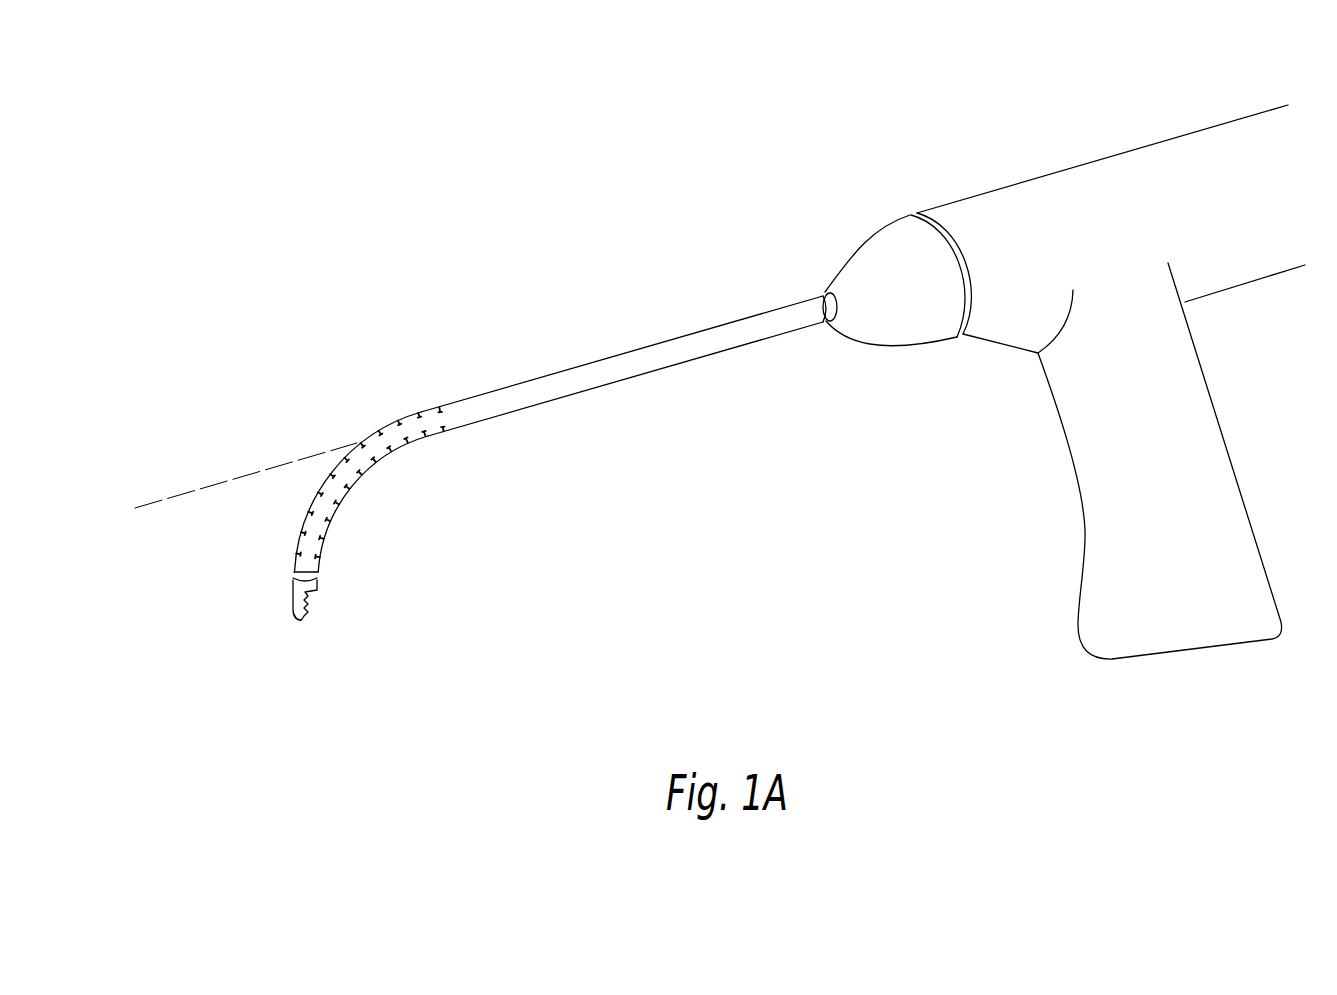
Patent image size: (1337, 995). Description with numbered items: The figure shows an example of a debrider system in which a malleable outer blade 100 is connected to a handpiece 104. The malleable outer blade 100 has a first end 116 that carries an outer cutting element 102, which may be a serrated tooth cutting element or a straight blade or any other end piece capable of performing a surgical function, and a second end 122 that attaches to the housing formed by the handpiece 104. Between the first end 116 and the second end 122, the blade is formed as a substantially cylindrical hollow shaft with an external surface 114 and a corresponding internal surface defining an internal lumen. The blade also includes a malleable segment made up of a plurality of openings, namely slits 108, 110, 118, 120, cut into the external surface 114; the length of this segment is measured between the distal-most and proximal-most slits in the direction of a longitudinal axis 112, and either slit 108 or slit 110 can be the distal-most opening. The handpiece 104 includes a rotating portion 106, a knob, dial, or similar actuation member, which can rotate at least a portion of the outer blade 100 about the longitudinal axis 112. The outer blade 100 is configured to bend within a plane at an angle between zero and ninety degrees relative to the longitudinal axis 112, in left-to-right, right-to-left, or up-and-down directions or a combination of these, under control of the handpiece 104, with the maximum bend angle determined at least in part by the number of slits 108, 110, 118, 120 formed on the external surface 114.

The malleable outer blade 100 is at (572, 368).
The outer cutting element 102 is at (308, 608).
The handpiece 104 is at (1172, 140).
The rotating portion 106 is at (878, 253).
The slit 108 is at (320, 556).
The slit 110 is at (297, 553).
The longitudinal axis 112 is at (248, 475).
The external surface 114 is at (632, 377).
The first end 116 is at (297, 623).
The slit 118 is at (324, 538).
The slit 120 is at (303, 533).
The second end 122 is at (822, 293).